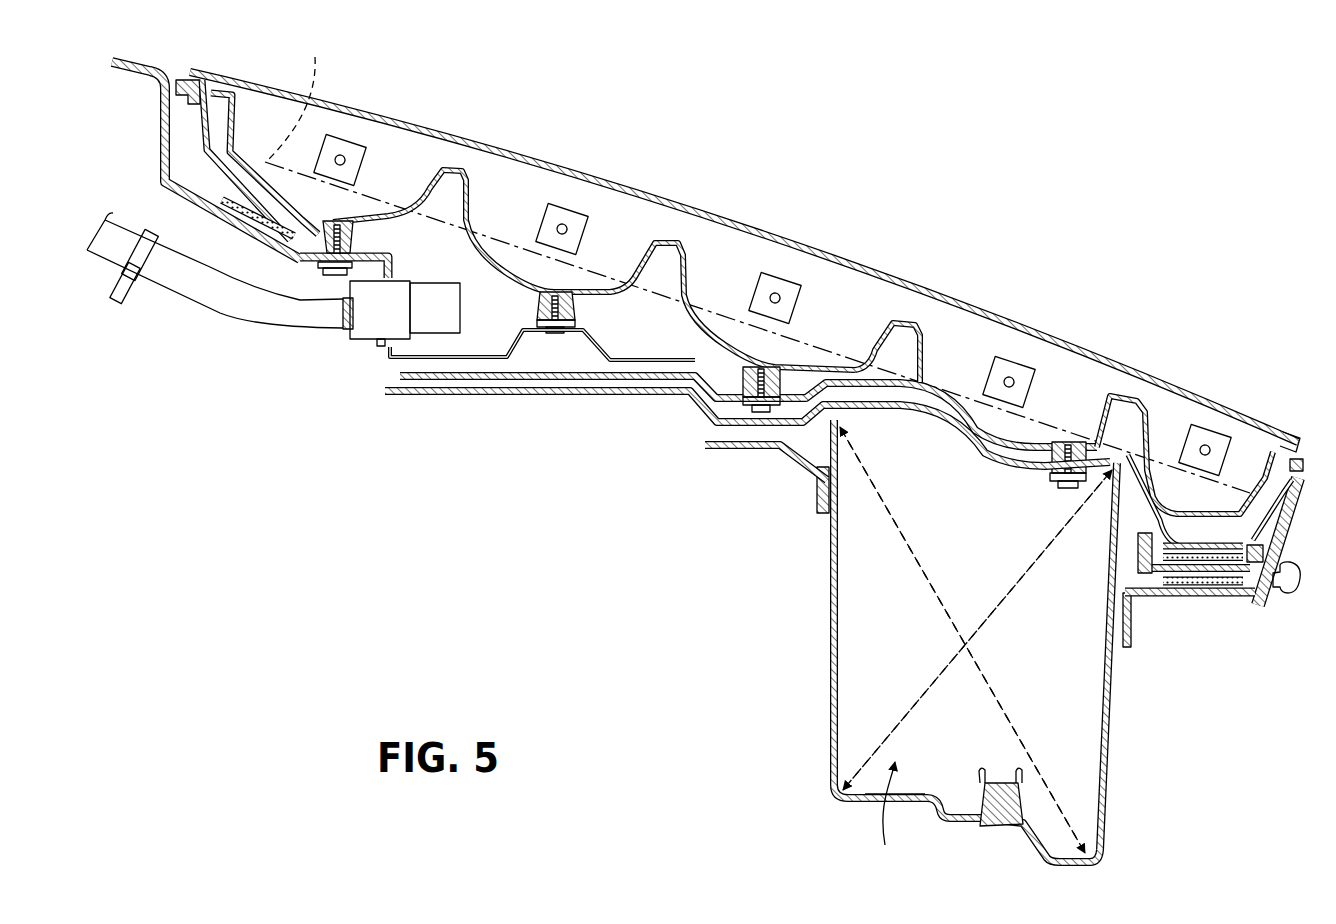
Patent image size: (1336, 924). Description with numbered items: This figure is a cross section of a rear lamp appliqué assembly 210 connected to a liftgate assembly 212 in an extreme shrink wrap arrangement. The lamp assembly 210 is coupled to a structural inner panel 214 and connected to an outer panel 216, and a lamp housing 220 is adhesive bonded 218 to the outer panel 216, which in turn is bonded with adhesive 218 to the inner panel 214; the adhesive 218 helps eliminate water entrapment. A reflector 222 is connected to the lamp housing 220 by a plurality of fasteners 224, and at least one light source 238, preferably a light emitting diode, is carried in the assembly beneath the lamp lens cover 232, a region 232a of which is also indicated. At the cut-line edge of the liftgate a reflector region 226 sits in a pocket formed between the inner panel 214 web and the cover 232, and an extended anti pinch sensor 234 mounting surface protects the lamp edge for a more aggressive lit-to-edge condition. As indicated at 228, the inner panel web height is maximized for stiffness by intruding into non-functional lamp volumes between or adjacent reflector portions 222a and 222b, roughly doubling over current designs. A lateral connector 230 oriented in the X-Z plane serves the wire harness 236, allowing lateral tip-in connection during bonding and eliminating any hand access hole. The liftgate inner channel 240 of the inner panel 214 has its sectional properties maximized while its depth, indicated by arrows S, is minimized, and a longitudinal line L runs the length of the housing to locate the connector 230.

The rear lamp appliqué assembly 210 is at (1098, 290).
The liftgate assembly 212 is at (747, 460).
The inner panel 214 is at (488, 396).
The outer panel 216 is at (160, 150).
The adhesive 218 is at (256, 222).
The lamp housing 220 is at (696, 388).
The reflector 222 is at (641, 256).
The reflector portion 222a is at (1125, 403).
The reflector portion 222b is at (868, 344).
The fasteners 224 is at (333, 273).
The reflector at cut-line edge of liftgate 226 is at (1302, 480).
The inner panel web height 228 is at (827, 425).
The lateral connector 230 is at (345, 348).
The lamp lens cover 232 is at (976, 300).
The lens edge 232a is at (1190, 398).
The anti pinch sensor mounting surface 234 is at (1268, 600).
The wire harness 236 is at (300, 328).
The light source 238 is at (778, 278).
The liftgate inner channel 240 is at (880, 668).